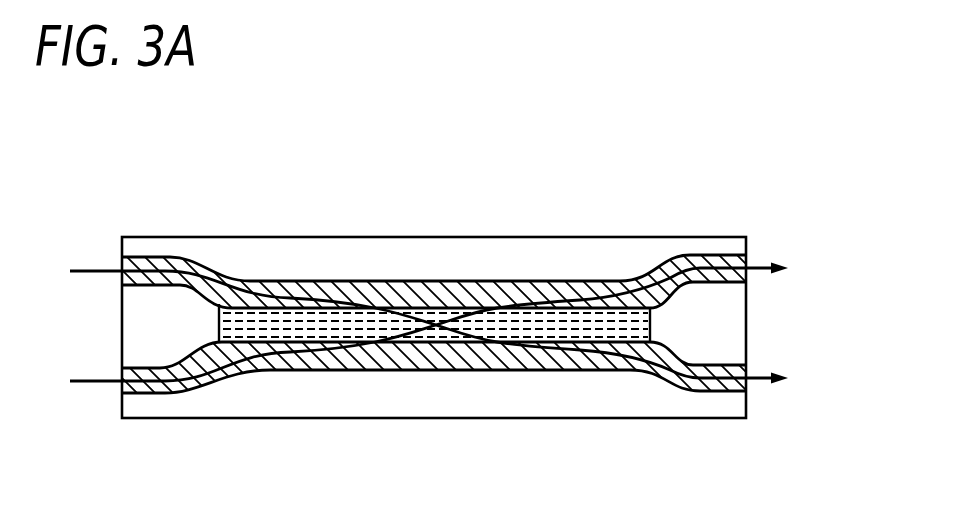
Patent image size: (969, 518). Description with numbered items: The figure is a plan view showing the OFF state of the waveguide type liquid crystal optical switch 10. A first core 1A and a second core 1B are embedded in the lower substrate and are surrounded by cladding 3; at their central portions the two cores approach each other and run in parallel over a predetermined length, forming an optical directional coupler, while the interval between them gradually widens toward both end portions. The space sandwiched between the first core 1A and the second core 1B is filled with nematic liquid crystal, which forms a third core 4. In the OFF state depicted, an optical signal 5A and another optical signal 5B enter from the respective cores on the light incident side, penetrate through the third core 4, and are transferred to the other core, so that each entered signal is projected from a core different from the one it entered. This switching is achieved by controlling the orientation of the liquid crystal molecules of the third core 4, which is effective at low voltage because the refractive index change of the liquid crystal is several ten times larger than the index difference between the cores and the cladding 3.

The waveguide type liquid crystal optical switch 10 is at (576, 156).
The first core 1A is at (701, 262).
The second core 1B is at (703, 393).
The cladding 3 is at (738, 303).
The third core 4 is at (648, 329).
The optical signal 5A is at (95, 267).
The optical signal 5B is at (97, 383).